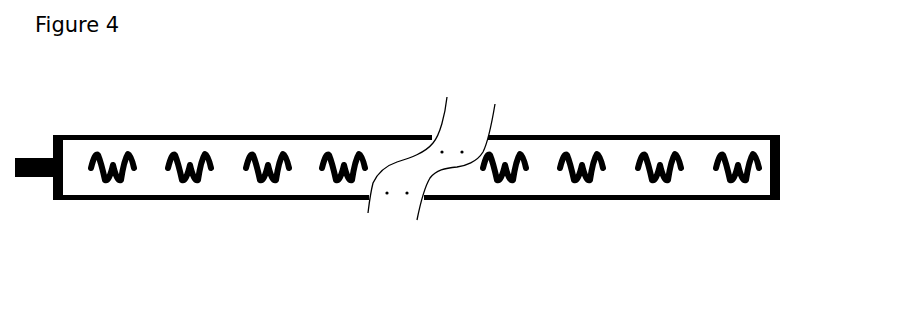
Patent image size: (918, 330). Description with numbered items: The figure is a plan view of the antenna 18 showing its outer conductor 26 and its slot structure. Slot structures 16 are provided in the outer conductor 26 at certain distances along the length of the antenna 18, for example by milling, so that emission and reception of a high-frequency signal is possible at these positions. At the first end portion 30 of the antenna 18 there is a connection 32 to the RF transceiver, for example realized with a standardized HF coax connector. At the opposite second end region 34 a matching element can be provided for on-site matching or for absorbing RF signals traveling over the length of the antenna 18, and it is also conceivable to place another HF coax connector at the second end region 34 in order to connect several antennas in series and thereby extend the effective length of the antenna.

The slot structures 16 is at (118, 182).
The antenna 18 is at (410, 179).
The outer conductor 26 is at (240, 134).
The first end portion 30 is at (65, 135).
The connection 32 is at (23, 157).
The second end region 34 is at (782, 158).